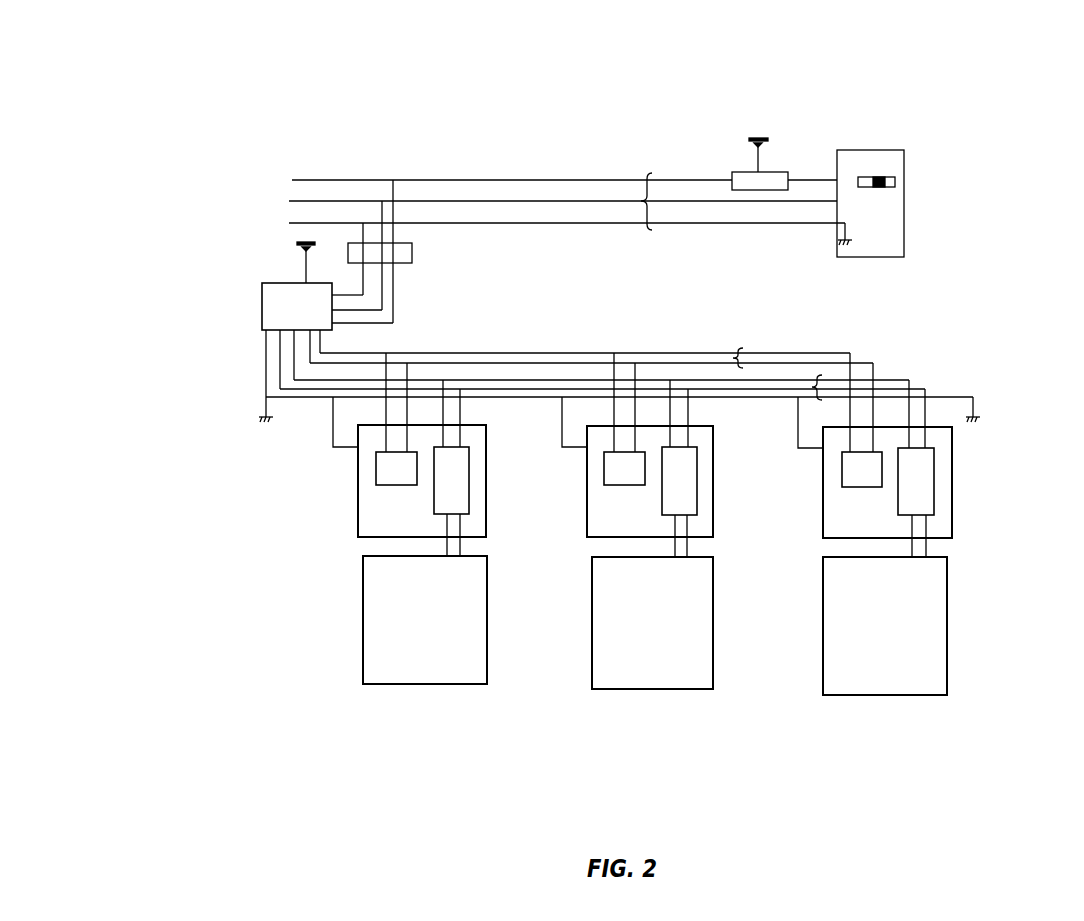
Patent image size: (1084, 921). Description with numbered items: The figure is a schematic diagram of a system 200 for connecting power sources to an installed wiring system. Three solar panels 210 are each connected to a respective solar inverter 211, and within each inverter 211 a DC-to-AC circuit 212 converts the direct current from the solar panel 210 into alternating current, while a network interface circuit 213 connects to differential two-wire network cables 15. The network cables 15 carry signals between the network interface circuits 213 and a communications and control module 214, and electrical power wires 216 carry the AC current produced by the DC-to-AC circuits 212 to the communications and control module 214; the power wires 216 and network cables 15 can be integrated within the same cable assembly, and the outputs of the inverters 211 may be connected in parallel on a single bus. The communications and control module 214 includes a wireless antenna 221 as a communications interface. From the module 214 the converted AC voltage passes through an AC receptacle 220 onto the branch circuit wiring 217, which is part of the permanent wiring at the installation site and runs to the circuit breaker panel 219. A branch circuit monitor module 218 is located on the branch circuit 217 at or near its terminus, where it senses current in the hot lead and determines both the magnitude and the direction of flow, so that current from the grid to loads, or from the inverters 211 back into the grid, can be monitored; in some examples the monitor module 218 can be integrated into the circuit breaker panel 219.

The solar power system 200 is at (143, 103).
The network cables 15 is at (728, 356).
The solar panels 210 is at (487, 675).
The solar inverters 211 is at (598, 528).
The DC-to-AC circuits 212 is at (670, 490).
The network interface circuits 213 is at (408, 467).
The communications and control module 214 is at (260, 288).
The electrical power wires 216 is at (826, 386).
The branch circuit wiring 217 is at (636, 200).
The branch circuit monitor module 218 is at (733, 172).
The circuit breaker panel 219 is at (908, 205).
The AC receptacle 220 is at (393, 253).
The wireless antenna 221 is at (293, 242).